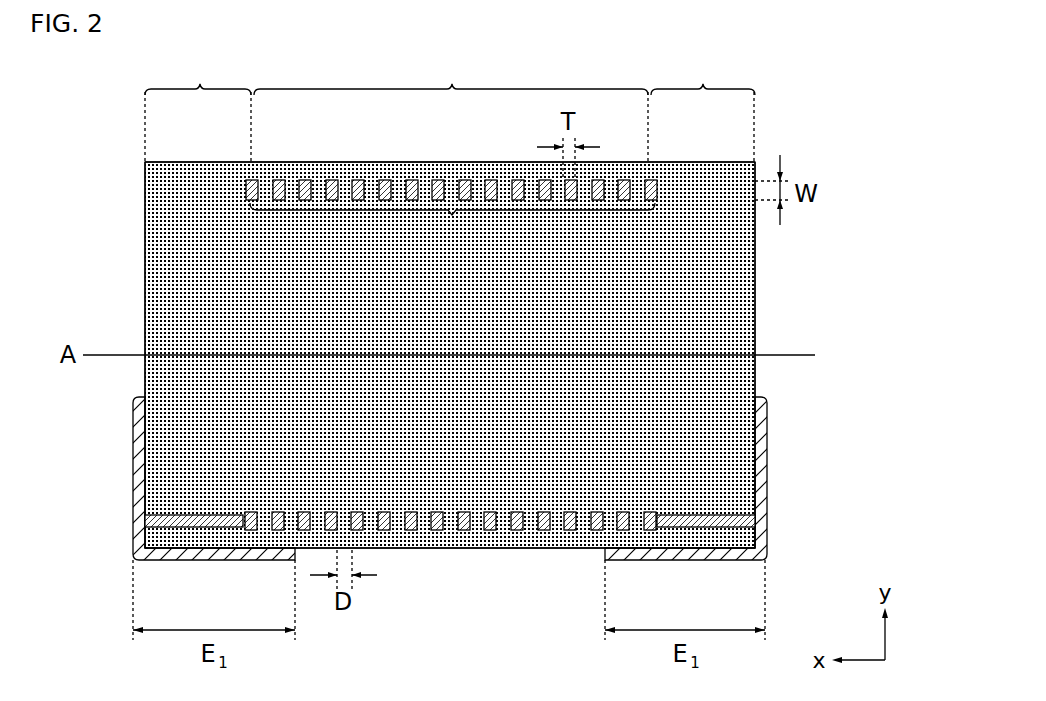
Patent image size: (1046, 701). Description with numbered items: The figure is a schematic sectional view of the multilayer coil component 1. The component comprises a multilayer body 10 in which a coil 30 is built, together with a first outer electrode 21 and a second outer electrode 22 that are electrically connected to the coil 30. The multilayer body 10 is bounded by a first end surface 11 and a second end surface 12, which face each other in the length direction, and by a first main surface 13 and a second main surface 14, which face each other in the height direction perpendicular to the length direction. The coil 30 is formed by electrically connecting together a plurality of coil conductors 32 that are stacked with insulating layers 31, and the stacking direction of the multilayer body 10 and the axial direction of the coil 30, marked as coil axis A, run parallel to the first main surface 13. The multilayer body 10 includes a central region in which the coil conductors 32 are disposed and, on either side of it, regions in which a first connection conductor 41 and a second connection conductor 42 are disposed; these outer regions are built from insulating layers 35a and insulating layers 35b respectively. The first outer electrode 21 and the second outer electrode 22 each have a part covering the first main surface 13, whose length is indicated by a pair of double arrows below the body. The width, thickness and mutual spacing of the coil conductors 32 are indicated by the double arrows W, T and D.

The multilayer coil component 1 is at (105, 130).
The multilayer body 10 is at (766, 266).
The first end surface 11 is at (145, 323).
The second end surface 12 is at (755, 323).
The first main surface 13 is at (423, 549).
The second main surface 14 is at (233, 162).
The first outer electrode 21 is at (140, 468).
The second outer electrode 22 is at (762, 450).
The coil 30 is at (497, 536).
The insulating layers 31 is at (451, 75).
The coil conductors 32 is at (451, 215).
The insulating layers 35a is at (198, 108).
The insulating layers 35b is at (701, 108).
The first connection conductor 41 is at (205, 522).
The second connection conductor 42 is at (695, 522).